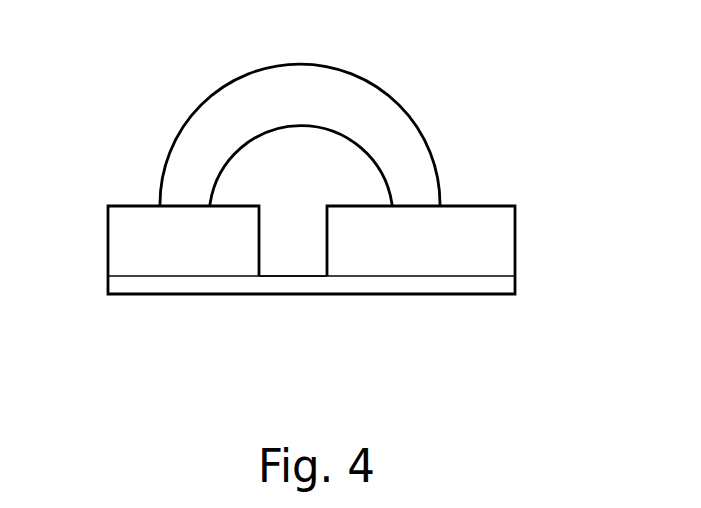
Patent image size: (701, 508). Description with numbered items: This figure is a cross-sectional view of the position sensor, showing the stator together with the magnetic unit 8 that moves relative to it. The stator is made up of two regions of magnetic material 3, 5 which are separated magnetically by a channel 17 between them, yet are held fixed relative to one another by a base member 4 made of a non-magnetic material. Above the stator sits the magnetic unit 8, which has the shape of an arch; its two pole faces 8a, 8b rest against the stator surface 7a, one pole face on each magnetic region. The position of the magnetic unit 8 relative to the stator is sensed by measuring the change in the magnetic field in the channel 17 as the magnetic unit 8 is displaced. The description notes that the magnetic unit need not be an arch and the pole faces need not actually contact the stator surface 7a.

The magnetic unit 8 is at (382, 76).
The pole face 8a is at (176, 205).
The pole face 8b is at (427, 205).
The region of magnetic material 5 is at (145, 243).
The stator surface 7a is at (493, 204).
The channel 17 is at (288, 266).
The region of magnetic material 3 is at (389, 269).
The base member 4 is at (473, 283).